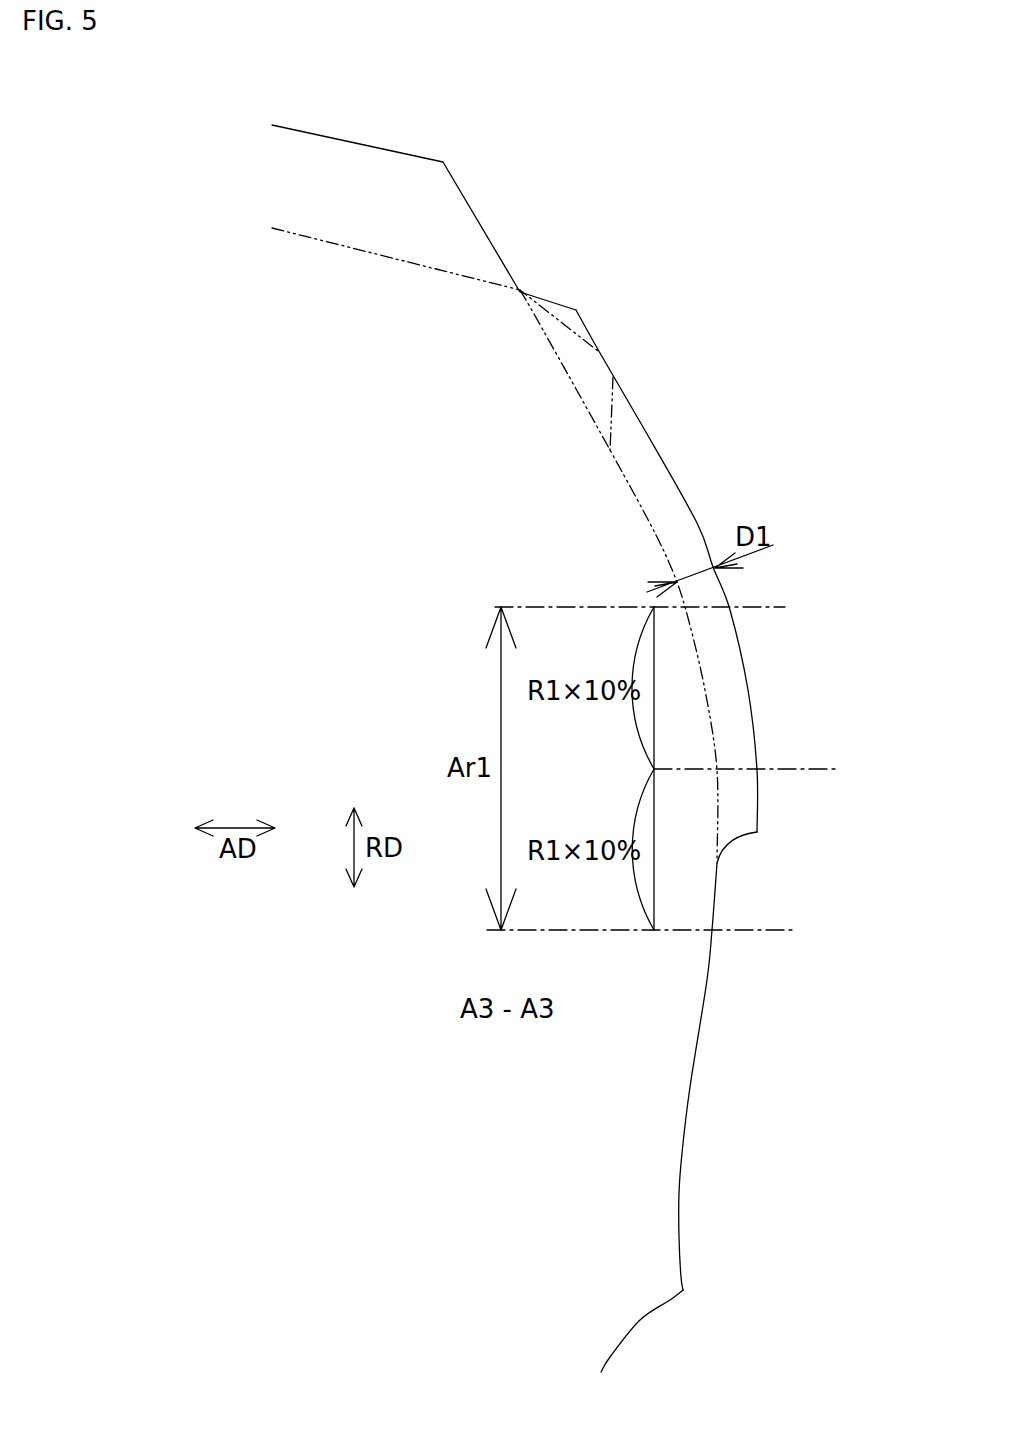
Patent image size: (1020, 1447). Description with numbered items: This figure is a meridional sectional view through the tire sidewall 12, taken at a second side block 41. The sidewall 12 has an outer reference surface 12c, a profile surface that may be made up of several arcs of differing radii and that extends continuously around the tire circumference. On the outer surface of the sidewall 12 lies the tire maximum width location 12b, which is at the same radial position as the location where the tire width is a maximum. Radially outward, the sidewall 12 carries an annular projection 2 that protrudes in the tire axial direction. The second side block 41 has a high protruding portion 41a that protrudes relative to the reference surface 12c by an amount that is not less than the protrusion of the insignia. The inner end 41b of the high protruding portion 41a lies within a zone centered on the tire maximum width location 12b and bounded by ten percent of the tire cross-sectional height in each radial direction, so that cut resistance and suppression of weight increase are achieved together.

The annular projection 2 is at (600, 348).
The second side block 41 is at (528, 478).
The high protruding portion 41a is at (641, 427).
The inner end 41b is at (757, 834).
The sidewall 12 is at (852, 1125).
The tire maximum width location 12b is at (773, 770).
The reference surface 12c is at (660, 538).